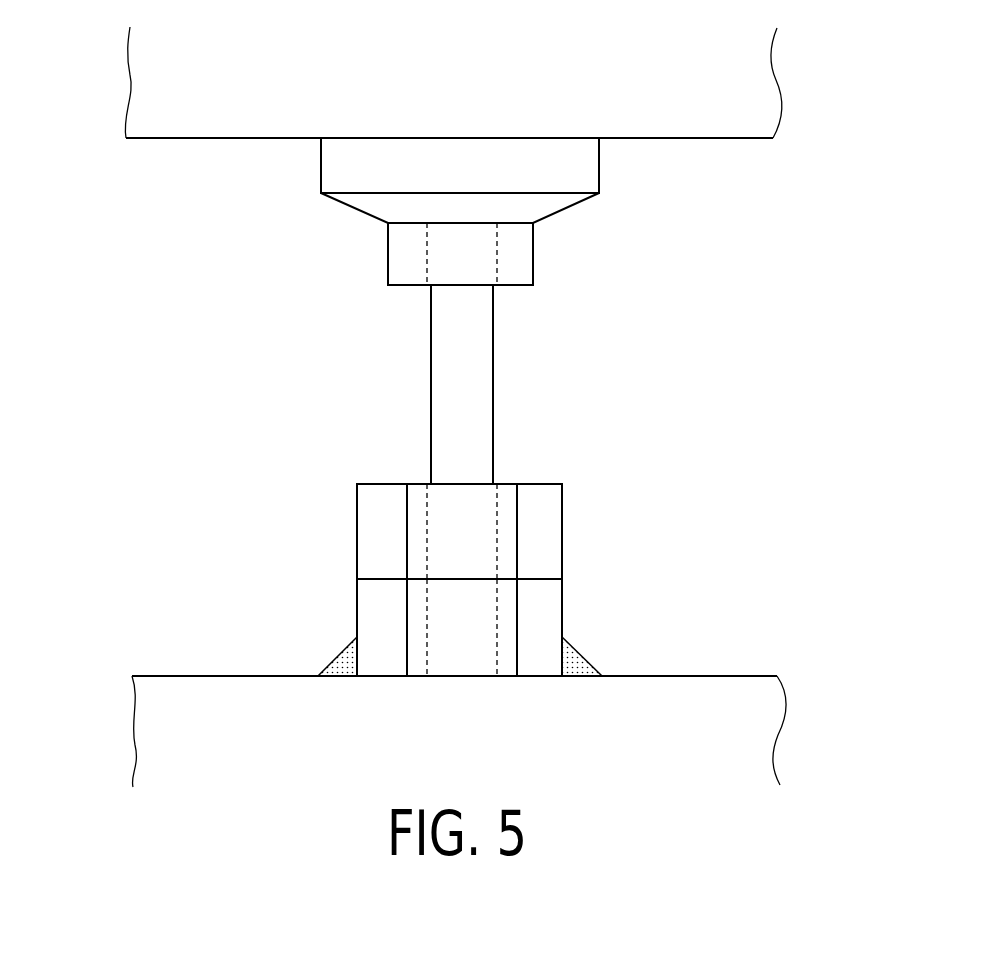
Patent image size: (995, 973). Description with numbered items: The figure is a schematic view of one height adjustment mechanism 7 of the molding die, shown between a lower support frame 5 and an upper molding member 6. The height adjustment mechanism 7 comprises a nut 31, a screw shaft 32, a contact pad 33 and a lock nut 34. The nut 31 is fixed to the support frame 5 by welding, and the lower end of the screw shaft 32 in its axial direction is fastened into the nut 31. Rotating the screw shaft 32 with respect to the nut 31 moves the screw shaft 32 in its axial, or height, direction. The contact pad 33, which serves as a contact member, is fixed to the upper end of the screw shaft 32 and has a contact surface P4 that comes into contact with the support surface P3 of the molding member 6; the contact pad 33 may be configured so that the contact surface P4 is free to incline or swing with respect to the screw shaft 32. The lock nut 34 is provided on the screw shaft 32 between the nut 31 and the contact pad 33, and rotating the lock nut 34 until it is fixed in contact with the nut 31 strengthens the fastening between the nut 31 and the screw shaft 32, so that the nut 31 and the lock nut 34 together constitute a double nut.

The support frame 5 is at (193, 676).
The molding member 6 is at (122, 68).
The height adjustment mechanism 7 is at (281, 311).
The nut 31 is at (563, 608).
The screw shaft 32 is at (495, 378).
The contact pad 33 is at (600, 177).
The lock nut 34 is at (563, 520).
The support surface P3 is at (167, 139).
The contact surface P4 is at (343, 138).